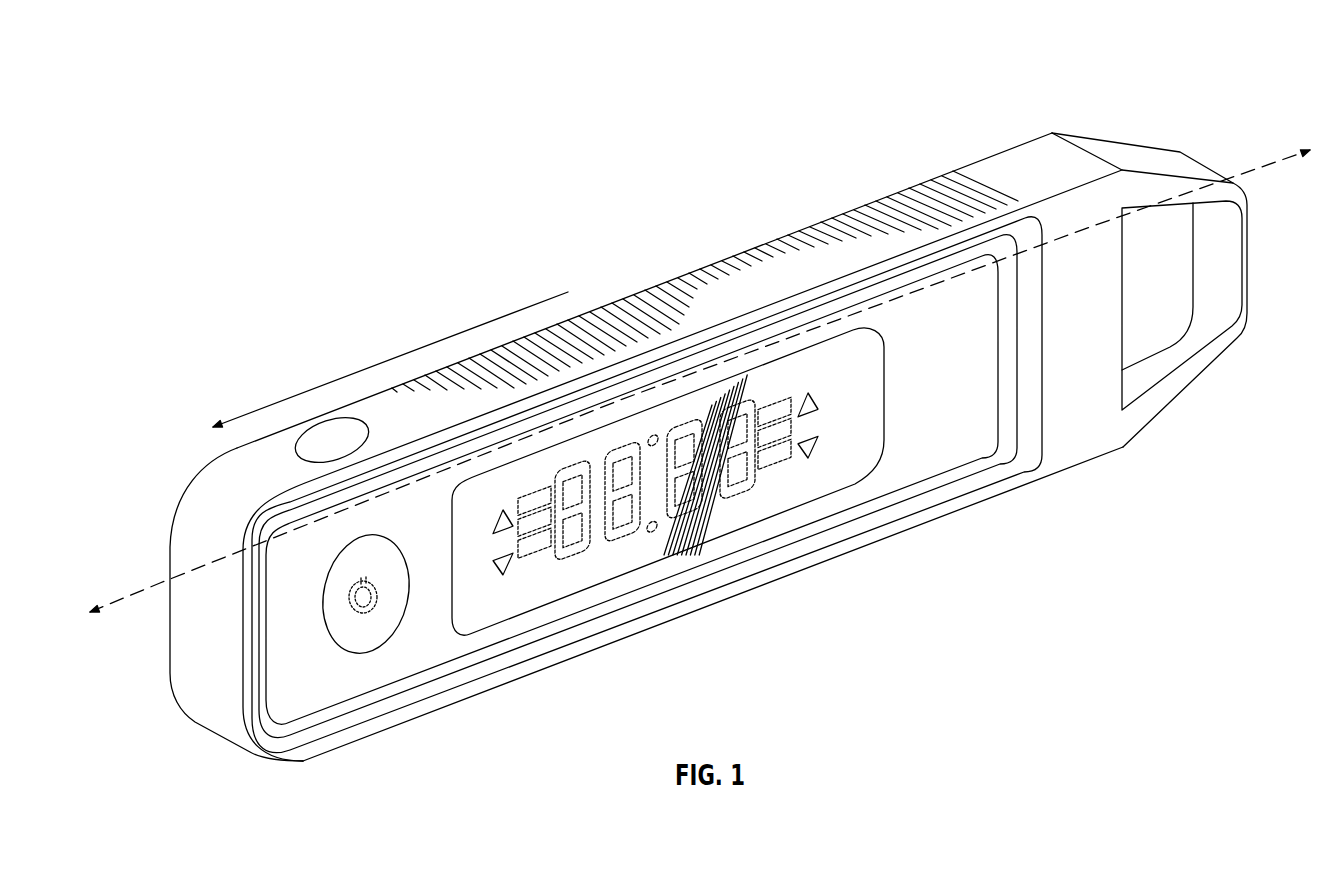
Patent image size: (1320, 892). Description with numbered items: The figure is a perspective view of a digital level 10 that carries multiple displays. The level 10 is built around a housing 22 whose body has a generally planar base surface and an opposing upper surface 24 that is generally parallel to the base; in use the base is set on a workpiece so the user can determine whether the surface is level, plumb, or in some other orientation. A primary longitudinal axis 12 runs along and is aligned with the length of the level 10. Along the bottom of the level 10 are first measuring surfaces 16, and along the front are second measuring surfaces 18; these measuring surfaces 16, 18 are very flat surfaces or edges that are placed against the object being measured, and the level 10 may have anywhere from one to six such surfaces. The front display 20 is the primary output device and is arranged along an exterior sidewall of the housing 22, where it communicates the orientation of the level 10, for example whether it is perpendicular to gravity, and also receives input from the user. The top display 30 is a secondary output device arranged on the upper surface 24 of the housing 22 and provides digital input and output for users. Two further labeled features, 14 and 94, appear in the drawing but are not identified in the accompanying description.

The digital level 10 is at (283, 134).
The primary longitudinal axis 12 is at (1250, 168).
The length of housing 14 is at (342, 381).
The first measuring surfaces 16 is at (397, 740).
The second measuring surfaces 18 is at (272, 629).
The front display 20 is at (743, 533).
The housing 22 is at (977, 162).
The upper surface 24 is at (1041, 156).
The top display 30 is at (303, 455).
The adjustment buttons 94 is at (494, 563).